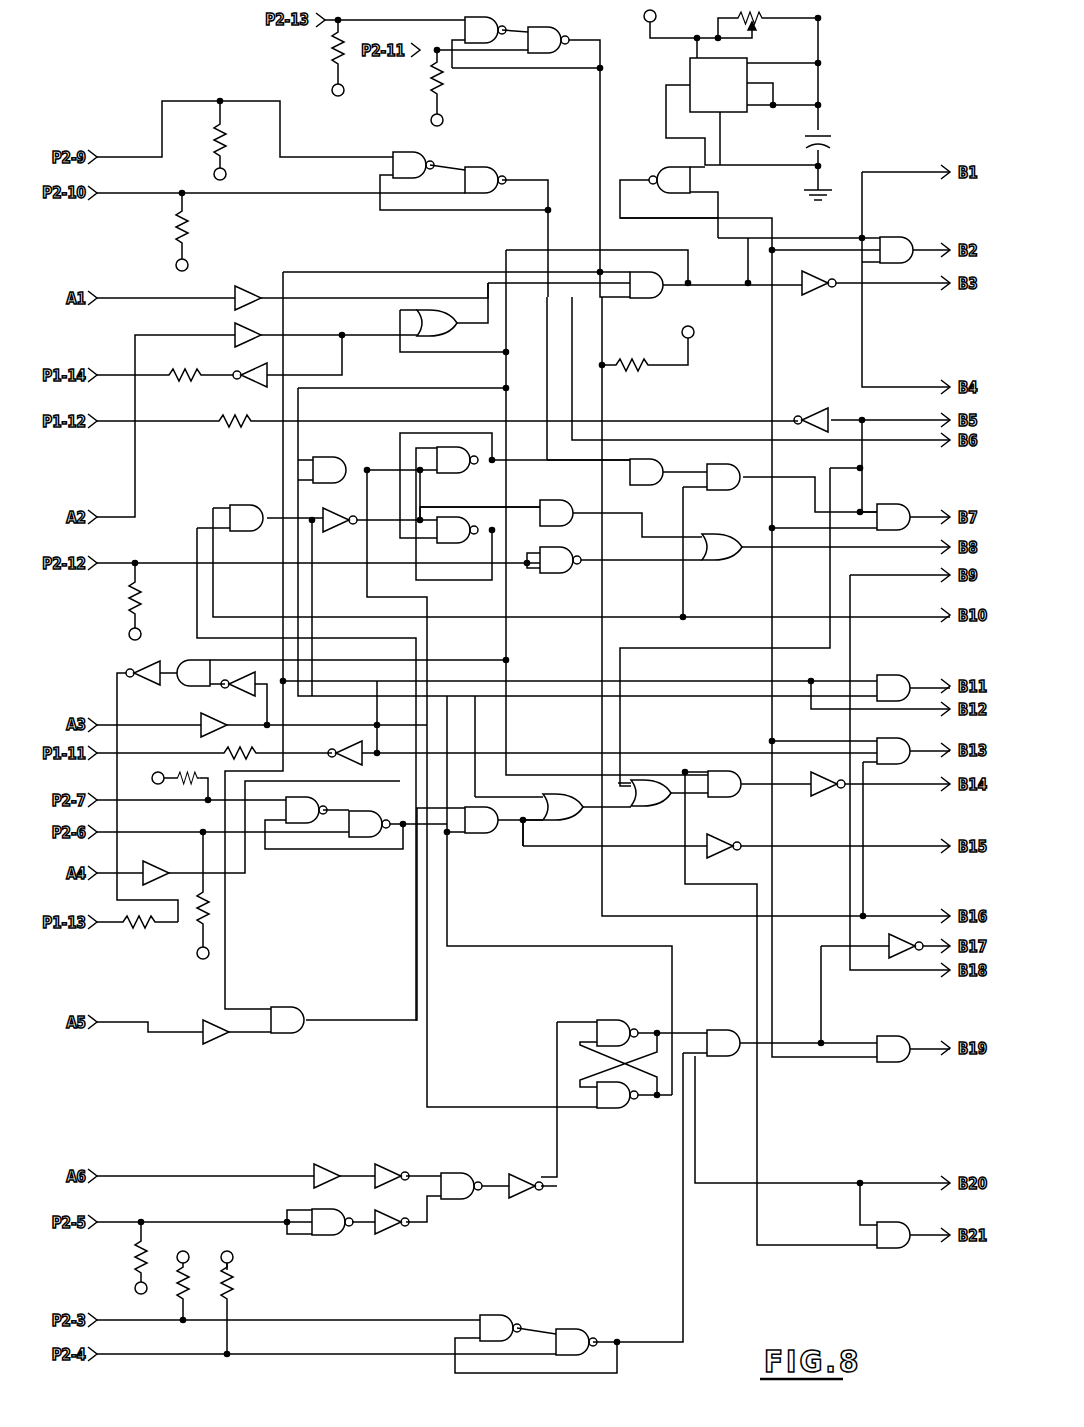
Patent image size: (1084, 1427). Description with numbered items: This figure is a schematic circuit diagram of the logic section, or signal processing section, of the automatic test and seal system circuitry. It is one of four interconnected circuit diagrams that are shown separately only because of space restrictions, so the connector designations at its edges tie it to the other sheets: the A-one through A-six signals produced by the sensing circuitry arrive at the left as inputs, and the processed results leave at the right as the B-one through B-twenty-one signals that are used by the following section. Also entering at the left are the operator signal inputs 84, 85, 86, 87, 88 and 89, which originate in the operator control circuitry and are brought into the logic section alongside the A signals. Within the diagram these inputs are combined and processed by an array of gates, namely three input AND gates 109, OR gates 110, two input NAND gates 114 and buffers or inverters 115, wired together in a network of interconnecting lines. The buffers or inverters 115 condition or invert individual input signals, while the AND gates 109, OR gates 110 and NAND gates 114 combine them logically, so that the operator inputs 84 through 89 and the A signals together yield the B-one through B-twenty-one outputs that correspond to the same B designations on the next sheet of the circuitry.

The operator signal input 84 is at (308, 62).
The operator signal input 85 is at (105, 173).
The operator signal input 86 is at (77, 590).
The operator signal input 87 is at (70, 1244).
The operator signal input 88 is at (106, 818).
The operator signal input 89 is at (94, 1334).
The 3 input AND gate 109 is at (650, 462).
The OR gate 110 is at (718, 558).
The 2 input NAND gate 114 is at (662, 175).
The buffer or inverter 115 is at (240, 294).